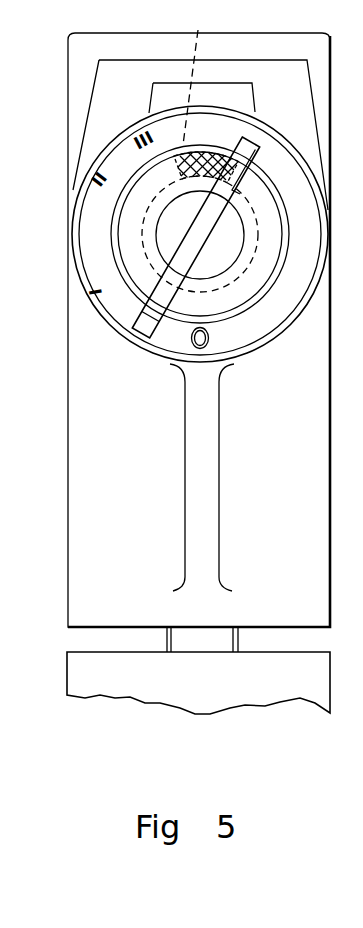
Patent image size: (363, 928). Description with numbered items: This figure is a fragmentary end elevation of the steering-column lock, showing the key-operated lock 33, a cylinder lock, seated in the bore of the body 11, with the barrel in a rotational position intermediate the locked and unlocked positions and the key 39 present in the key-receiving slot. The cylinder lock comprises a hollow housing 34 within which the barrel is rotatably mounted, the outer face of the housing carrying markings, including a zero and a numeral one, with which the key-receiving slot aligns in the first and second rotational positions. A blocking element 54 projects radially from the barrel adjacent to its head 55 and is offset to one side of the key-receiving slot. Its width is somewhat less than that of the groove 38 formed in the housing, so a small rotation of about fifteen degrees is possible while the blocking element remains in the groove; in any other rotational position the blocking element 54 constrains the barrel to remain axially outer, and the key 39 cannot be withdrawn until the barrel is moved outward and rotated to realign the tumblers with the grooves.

The body 11 is at (61, 389).
The key-operated lock 33 is at (72, 272).
The hollow housing 34 is at (92, 234).
The groove 38 is at (197, 25).
The key 39 is at (140, 333).
The blocking element 54 is at (230, 143).
The head 55 is at (143, 177).